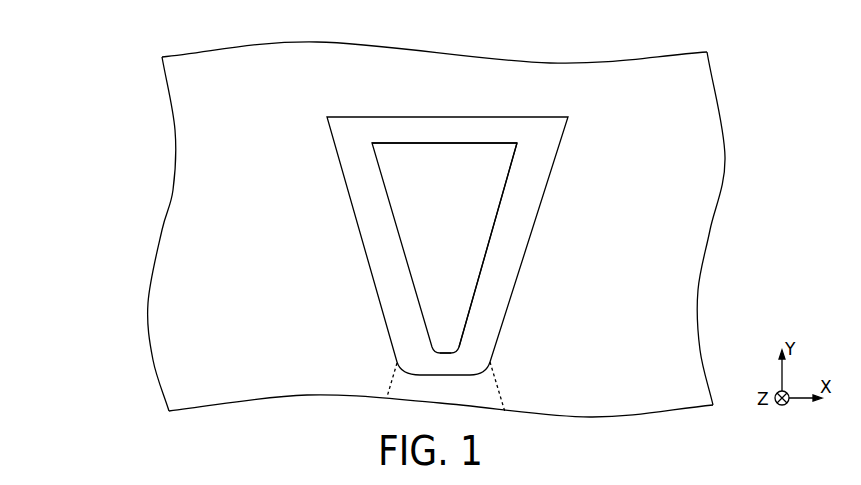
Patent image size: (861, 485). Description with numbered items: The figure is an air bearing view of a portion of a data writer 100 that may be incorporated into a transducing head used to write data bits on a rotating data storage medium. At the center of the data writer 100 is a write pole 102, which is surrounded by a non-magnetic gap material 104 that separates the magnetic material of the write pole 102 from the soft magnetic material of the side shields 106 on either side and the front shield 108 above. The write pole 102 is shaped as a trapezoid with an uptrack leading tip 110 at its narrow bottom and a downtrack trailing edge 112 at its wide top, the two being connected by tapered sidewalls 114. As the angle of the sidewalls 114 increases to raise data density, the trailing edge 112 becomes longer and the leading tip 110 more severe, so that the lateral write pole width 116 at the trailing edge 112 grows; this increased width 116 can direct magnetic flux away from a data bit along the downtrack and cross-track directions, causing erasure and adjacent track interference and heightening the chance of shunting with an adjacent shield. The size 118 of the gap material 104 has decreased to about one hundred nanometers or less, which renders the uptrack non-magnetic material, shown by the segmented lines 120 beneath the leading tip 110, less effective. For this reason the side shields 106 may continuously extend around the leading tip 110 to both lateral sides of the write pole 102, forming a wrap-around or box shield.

The data writer 100 is at (101, 43).
The write pole 102 is at (462, 281).
The non-magnetic gap material 104 is at (332, 154).
The side shield 106 is at (204, 400).
The front shield 108 is at (204, 80).
The leading tip 110 is at (470, 353).
The trailing edge 112 is at (440, 144).
The tapered sidewalls 114 is at (500, 203).
The write pole width 116 is at (372, 107).
The gap material size 118 is at (360, 223).
The segmented lines 120 is at (387, 377).